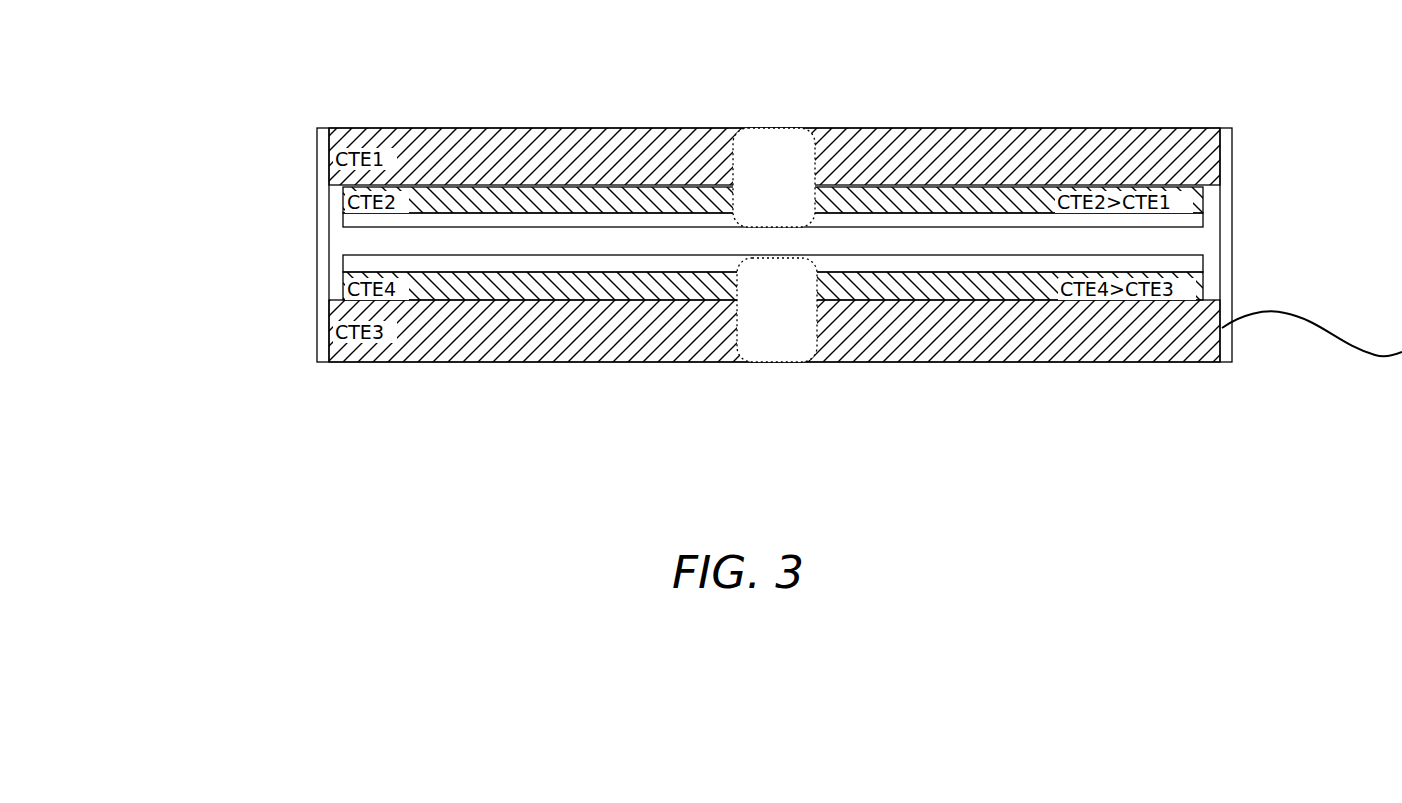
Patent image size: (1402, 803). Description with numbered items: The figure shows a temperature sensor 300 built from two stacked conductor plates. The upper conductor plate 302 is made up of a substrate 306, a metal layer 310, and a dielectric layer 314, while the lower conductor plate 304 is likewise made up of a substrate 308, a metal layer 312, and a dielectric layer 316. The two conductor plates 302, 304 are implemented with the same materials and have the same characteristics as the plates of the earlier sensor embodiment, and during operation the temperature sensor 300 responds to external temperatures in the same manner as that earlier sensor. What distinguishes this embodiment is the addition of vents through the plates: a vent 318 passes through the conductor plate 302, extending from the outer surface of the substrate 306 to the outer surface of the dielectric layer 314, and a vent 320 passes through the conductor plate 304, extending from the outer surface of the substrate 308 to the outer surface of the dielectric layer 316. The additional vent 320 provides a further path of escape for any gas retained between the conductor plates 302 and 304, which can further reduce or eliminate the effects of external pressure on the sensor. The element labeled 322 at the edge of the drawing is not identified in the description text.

The temperature sensor 300 is at (268, 443).
The conductor plate 302 is at (1010, 115).
The conductor plate 304 is at (1053, 365).
The substrate 306 is at (1212, 152).
The substrate 308 is at (1205, 192).
The metal layer 310 is at (1203, 218).
The metal layer 312 is at (340, 328).
The dielectric layer 314 is at (343, 283).
The dielectric layer 316 is at (340, 268).
The vent 318 is at (765, 145).
The vent 320 is at (785, 345).
The flexible region 322 is at (1362, 357).